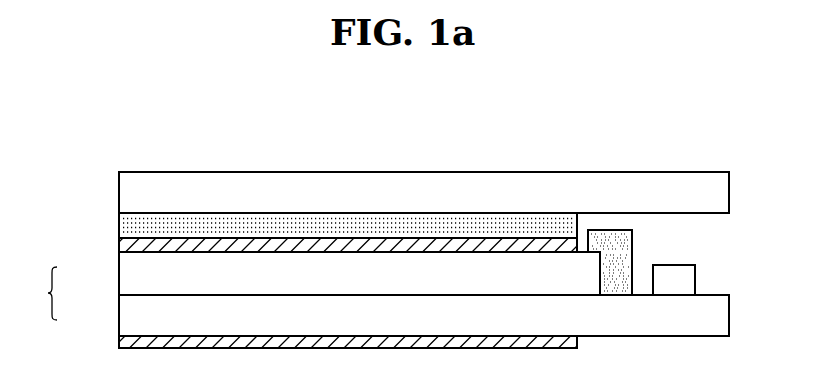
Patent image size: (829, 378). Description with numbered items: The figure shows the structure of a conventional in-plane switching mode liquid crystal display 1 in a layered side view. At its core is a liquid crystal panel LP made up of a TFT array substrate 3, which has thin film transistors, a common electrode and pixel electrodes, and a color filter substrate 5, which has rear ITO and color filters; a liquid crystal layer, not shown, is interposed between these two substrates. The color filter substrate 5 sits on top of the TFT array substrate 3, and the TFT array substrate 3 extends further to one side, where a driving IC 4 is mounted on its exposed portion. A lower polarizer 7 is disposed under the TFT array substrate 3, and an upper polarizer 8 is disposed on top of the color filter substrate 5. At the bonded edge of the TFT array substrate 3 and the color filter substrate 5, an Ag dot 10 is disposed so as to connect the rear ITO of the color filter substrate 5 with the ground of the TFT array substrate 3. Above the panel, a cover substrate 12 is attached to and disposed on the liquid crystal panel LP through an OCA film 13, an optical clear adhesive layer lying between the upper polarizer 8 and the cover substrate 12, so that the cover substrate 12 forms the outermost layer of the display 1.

The in-plane switching mode liquid crystal display 1 is at (167, 122).
The cover substrate 12 is at (128, 188).
The OCA film 13 is at (127, 219).
The upper polarizer 8 is at (127, 243).
The color filter substrate 5 is at (127, 271).
The TFT array substrate 3 is at (127, 313).
The liquid crystal panel LP is at (39, 293).
The lower polarizer 7 is at (127, 340).
The Ag dot 10 is at (620, 247).
The driving IC 4 is at (688, 278).